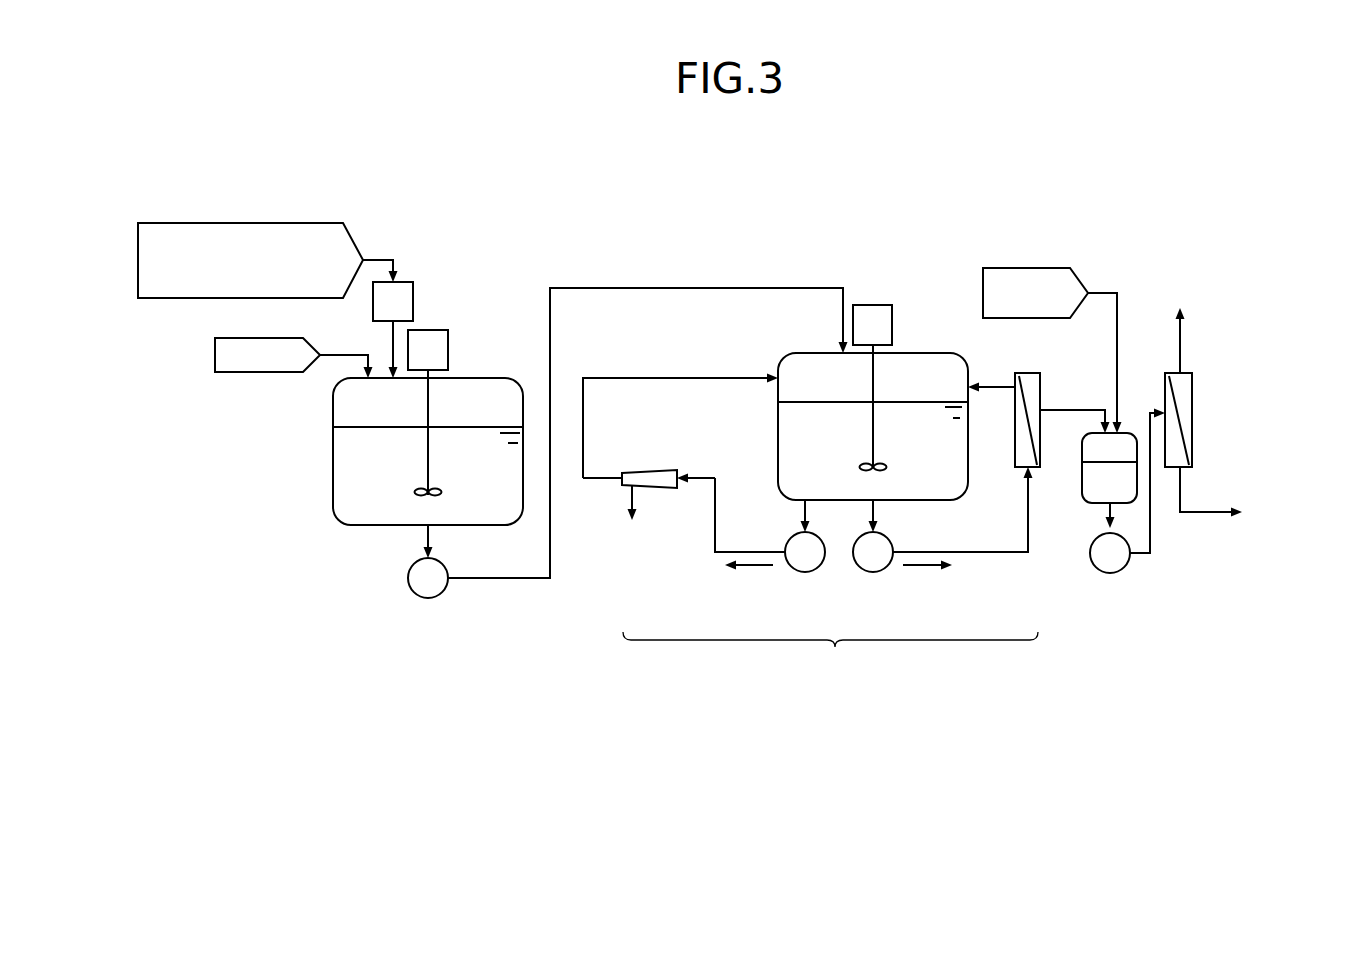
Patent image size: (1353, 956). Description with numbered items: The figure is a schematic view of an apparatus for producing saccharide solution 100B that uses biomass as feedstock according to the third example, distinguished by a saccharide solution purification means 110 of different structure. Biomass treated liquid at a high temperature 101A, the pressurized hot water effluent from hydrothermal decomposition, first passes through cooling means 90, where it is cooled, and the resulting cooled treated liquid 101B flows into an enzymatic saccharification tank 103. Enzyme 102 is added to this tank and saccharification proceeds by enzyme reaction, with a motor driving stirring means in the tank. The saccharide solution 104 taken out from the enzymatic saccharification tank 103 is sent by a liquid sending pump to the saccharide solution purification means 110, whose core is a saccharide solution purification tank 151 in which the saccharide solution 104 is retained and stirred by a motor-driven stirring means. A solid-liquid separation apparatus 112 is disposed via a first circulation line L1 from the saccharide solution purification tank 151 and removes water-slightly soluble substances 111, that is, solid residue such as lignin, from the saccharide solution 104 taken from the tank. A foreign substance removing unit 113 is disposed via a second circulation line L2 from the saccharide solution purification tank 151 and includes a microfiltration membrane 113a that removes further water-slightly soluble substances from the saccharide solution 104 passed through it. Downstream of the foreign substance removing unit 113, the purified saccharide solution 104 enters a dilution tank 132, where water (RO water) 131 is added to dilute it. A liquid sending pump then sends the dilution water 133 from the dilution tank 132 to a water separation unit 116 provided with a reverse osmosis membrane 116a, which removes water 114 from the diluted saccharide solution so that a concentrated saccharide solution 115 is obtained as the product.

The apparatus for producing saccharide solution 100B is at (811, 209).
The biomass treated liquid at a high temperature 101A is at (248, 222).
The cooled treated liquid 101B is at (391, 341).
The cooling means 90 is at (418, 301).
The enzyme 102 is at (248, 375).
The enzymatic saccharification tank 103 is at (333, 478).
The saccharide solution 104 is at (495, 580).
The saccharide solution purification tank 151 is at (778, 420).
The saccharide solution purification means 110 is at (830, 655).
The water-slightly soluble substances 111 is at (625, 499).
The solid-liquid separation apparatus 112 is at (652, 468).
The foreign substance removing unit 113 is at (1011, 477).
The microfiltration (MF) membrane 113a is at (1030, 374).
The water 114 is at (1176, 345).
The concentrated saccharide solution 115 is at (1210, 515).
The water separation unit 116 is at (1212, 456).
The reverse osmosis (RO) membrane 116a is at (1205, 400).
The water (RO water) 131 is at (1012, 266).
The dilution tank 132 is at (1086, 418).
The dilution water 133 is at (1152, 543).
The first circulation line L1 is at (715, 538).
The second circulation line L2 is at (1030, 517).